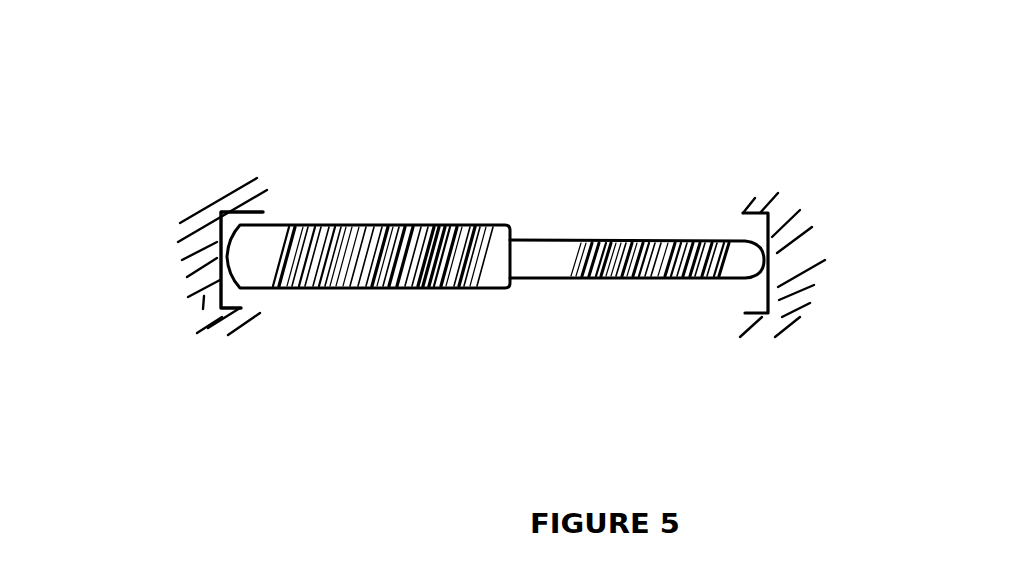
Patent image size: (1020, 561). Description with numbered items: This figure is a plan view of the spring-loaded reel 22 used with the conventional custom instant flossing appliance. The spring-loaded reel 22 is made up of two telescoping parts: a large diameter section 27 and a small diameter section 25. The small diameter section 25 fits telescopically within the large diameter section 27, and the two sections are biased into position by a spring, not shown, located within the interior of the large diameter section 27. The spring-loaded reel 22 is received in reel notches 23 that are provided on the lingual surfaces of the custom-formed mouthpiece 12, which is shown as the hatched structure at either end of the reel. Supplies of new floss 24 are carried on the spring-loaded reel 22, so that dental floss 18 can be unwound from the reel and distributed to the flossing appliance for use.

The custom-formed mouthpiece 12 is at (207, 297).
The dental floss 18 is at (483, 230).
The spring-loaded reel 22 is at (285, 170).
The reel notches 23 is at (243, 303).
The supplies of new floss 24 is at (433, 288).
The small diameter section 25 is at (650, 240).
The large diameter section 27 is at (315, 226).